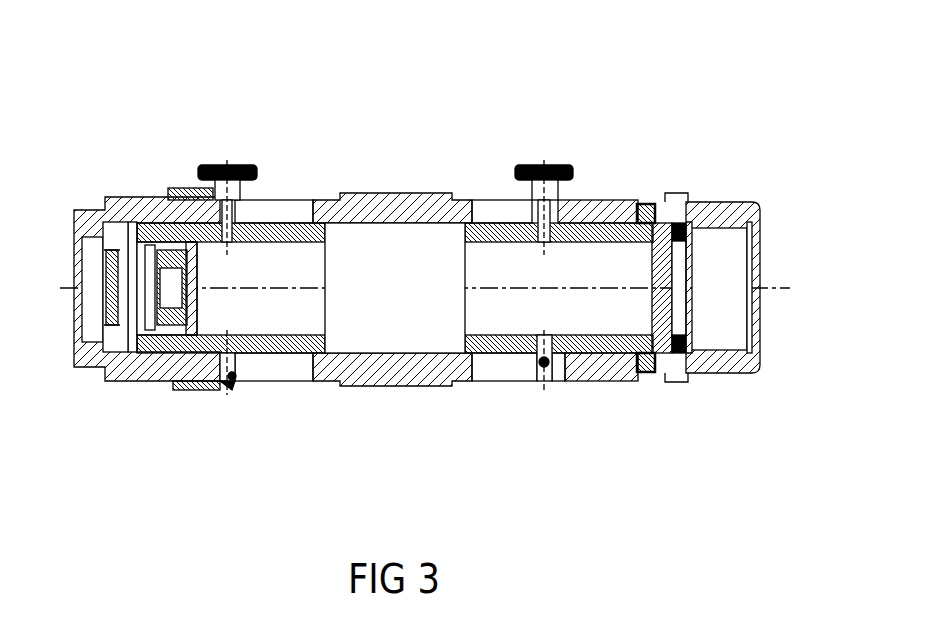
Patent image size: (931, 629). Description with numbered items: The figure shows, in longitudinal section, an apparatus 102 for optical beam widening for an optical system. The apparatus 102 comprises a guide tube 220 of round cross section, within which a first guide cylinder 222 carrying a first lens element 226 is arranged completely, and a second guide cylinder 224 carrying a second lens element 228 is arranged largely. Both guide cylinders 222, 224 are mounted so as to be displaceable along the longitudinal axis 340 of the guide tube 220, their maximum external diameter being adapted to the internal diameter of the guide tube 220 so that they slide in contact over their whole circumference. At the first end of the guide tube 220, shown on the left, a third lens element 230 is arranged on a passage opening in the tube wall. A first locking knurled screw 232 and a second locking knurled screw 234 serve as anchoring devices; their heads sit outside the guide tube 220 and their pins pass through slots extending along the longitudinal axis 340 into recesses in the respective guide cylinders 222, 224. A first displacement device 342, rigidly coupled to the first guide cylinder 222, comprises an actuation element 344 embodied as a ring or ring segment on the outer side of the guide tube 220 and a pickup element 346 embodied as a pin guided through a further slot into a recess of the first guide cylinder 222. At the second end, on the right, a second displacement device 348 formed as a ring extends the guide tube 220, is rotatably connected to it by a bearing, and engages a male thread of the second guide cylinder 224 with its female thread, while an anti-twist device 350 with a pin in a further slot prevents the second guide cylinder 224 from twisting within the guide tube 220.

The apparatus 102 is at (131, 95).
The guide tube 220 is at (415, 193).
The first guide cylinder 222 is at (197, 336).
The second guide cylinder 224 is at (490, 330).
The first lens element 226 is at (177, 340).
The second lens element 228 is at (613, 343).
The third lens element 230 is at (115, 335).
The first locking knurled screw 232 is at (257, 170).
The second locking knurled screw 234 is at (570, 170).
The longitudinal axis 340 is at (398, 290).
The first displacement device 342 is at (246, 402).
The actuation element 344 is at (196, 387).
The pickup element 346 is at (248, 377).
The second displacement device 348 is at (697, 203).
The anti-twist device 350 is at (544, 366).